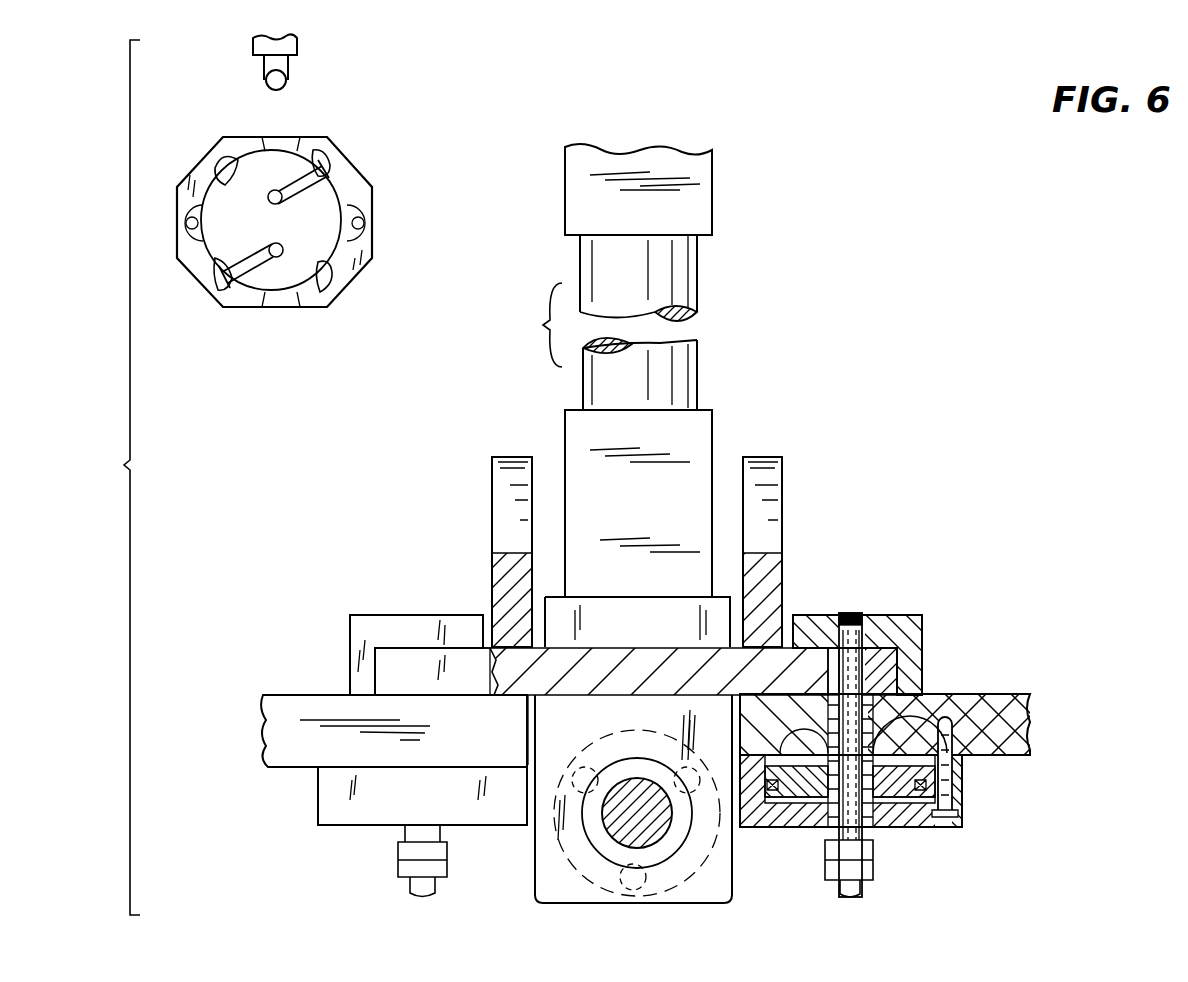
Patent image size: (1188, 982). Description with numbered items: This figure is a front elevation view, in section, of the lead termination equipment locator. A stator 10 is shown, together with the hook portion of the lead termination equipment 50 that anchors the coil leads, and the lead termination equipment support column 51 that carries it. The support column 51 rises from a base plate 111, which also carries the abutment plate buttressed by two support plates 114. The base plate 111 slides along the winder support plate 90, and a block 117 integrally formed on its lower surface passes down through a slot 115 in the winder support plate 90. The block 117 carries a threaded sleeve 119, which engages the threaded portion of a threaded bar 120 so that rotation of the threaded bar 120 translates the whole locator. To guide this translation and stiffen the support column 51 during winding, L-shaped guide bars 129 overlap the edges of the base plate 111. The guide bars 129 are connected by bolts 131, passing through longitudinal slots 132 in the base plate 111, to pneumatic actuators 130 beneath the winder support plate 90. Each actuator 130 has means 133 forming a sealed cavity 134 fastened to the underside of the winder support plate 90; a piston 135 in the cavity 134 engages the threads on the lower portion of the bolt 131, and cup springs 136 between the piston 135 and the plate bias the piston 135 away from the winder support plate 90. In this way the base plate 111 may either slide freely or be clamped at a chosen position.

The lead termination equipment 50 is at (300, 55).
The stator 10 is at (345, 298).
The lead termination equipment support column 51 is at (710, 408).
The support plates 114 is at (492, 498).
The L-shaped guide bars 129 is at (350, 615).
The base plate 111 is at (430, 689).
The winder support plate 90 is at (318, 758).
The block 117 is at (734, 898).
The threaded bar 120 is at (655, 832).
The threaded sleeve 119 is at (600, 845).
The slot 115 is at (690, 768).
The bolts 131 is at (842, 616).
The longitudinal slots 132 is at (866, 650).
The pneumatic actuators 130 is at (976, 828).
The means forming sealed cavities 133 is at (775, 829).
The piston 135 is at (907, 790).
The cup springs 136 is at (922, 745).
The sealed cavity 134 is at (975, 757).